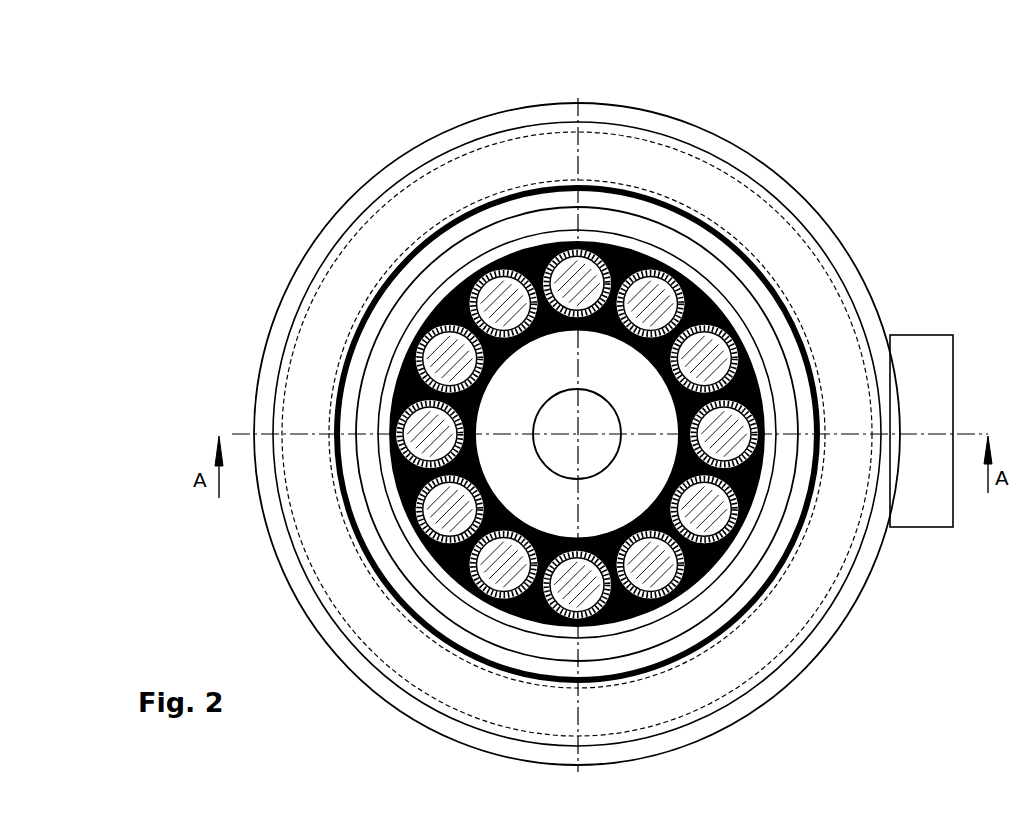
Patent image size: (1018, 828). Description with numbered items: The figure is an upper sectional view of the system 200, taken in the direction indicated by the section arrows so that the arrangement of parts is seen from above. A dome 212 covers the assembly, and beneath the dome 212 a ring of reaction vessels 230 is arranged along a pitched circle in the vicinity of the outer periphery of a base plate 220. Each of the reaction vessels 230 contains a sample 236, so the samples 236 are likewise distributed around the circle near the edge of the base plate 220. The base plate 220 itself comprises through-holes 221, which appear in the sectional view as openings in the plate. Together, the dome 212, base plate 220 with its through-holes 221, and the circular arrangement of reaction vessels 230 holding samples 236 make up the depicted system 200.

The system 200 is at (890, 107).
The dome 212 is at (787, 300).
The base plate 220 is at (707, 572).
The through-holes 221 is at (556, 243).
The reaction vessels 230 is at (430, 568).
The samples 236 is at (450, 350).